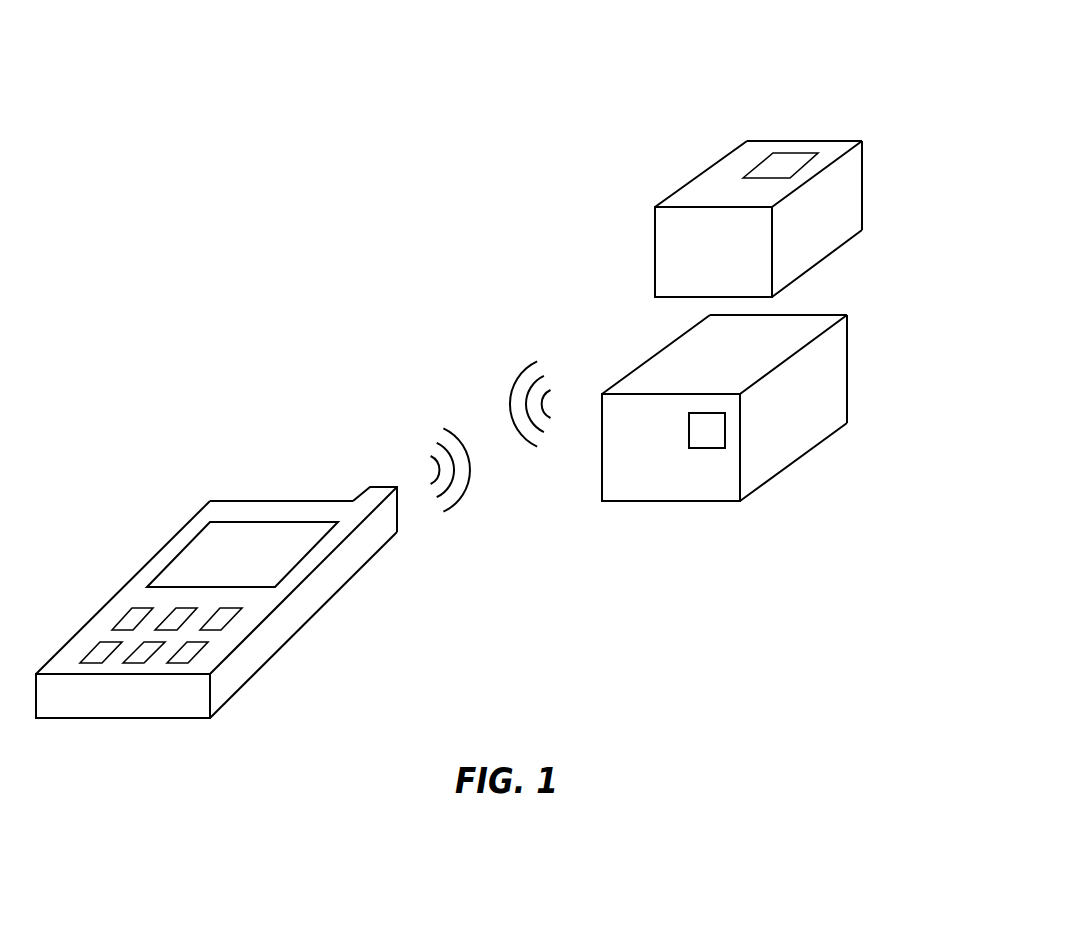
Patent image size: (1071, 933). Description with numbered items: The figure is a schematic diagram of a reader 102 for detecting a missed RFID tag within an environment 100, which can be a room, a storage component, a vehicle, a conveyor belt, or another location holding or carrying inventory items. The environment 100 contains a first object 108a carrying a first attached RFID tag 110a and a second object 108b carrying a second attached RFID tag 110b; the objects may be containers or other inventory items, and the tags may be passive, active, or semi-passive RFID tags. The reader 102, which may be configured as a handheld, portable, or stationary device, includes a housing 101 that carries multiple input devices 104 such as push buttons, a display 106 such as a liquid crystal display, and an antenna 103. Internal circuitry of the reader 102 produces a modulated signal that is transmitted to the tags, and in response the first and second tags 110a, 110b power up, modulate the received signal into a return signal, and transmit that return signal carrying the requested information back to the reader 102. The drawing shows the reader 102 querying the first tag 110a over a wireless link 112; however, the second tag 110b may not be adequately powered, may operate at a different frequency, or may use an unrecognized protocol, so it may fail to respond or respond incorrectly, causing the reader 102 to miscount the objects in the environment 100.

The environment 100 is at (348, 106).
The housing 101 is at (245, 663).
The reader 102 is at (112, 712).
The antenna 103 is at (397, 513).
The input devices 104 is at (120, 627).
The display 106 is at (182, 551).
The first object 108a is at (847, 370).
The second object 108b is at (863, 170).
The first RFID tag 110a is at (725, 423).
The second RFID tag 110b is at (792, 154).
The wireless link 112 is at (432, 415).